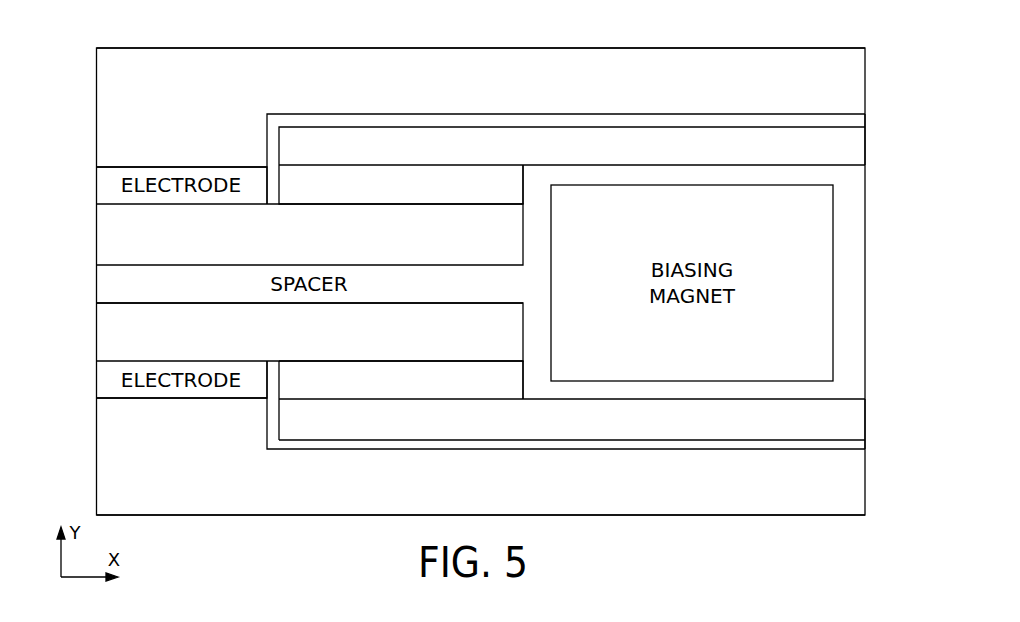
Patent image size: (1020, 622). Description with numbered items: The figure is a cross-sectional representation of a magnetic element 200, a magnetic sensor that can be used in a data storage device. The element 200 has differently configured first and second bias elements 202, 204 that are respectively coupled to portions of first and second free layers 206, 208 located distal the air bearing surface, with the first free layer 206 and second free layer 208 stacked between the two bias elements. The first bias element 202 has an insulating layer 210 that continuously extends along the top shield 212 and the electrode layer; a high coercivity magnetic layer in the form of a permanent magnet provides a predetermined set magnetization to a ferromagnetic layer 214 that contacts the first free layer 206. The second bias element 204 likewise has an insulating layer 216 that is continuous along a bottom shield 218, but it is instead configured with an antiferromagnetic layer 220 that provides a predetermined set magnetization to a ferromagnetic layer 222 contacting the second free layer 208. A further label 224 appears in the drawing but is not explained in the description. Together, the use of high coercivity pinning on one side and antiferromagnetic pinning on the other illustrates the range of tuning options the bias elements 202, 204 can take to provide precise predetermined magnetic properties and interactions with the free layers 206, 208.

The magnetic element 200 is at (760, 43).
The first bias element 202 is at (866, 163).
The second bias element 204 is at (866, 400).
The first free layer 206 is at (310, 234).
The second free layer 208 is at (310, 332).
The insulating layer 210 is at (309, 118).
The top shield 212 is at (481, 107).
The ferromagnetic layer 214 is at (572, 146).
The insulating layer 216 is at (287, 178).
The bottom shield 218 is at (362, 448).
The antiferromagnetic layer 220 is at (481, 456).
The ferromagnetic layer 222 is at (572, 400).
The lower ferromagnetic layer 224 is at (283, 397).